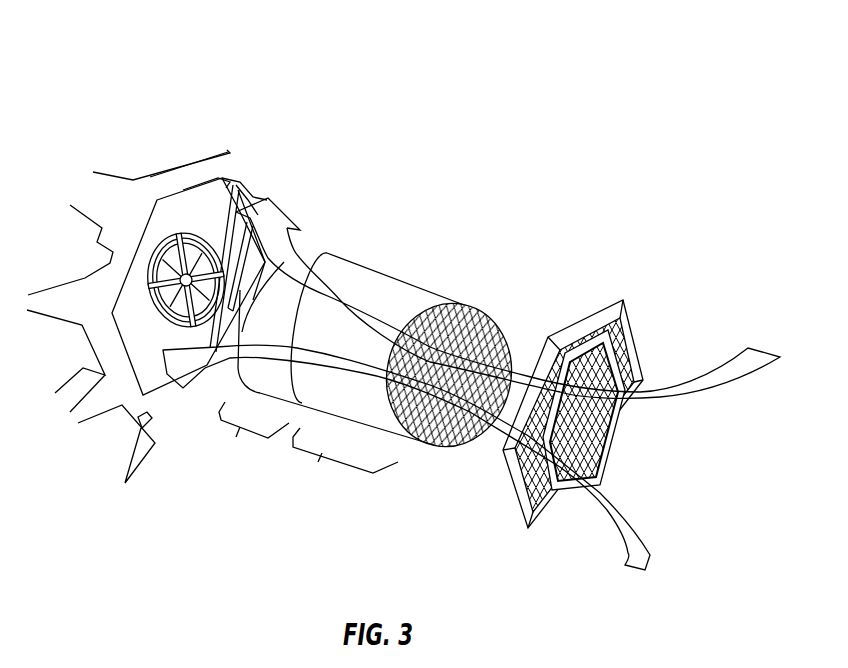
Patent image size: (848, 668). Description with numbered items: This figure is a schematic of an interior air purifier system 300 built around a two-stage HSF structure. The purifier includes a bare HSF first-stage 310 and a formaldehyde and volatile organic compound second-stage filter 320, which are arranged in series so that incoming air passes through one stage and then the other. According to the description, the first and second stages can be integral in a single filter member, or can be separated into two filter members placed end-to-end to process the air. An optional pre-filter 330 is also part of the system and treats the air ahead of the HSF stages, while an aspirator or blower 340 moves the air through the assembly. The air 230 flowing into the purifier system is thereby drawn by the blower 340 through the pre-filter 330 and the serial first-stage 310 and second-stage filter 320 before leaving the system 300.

The interior air purifier system 300 is at (577, 138).
The aspirator or blower 340 is at (180, 222).
The formaldehyde and volatile organic compound second-stage filter 320 is at (232, 436).
The bare HSF first-stage 310 is at (318, 457).
The pre-filter 330 is at (623, 300).
The air 230 is at (518, 298).